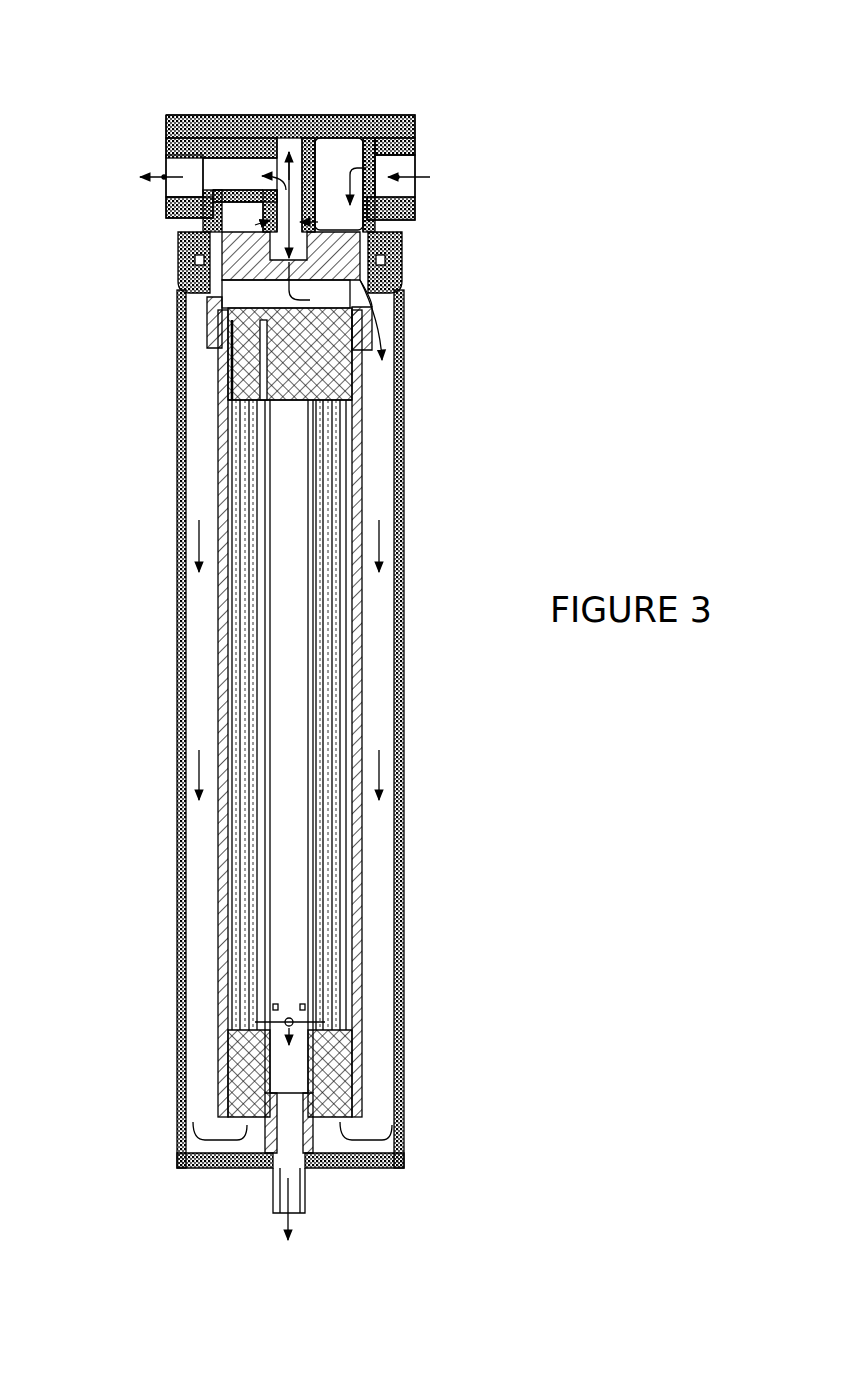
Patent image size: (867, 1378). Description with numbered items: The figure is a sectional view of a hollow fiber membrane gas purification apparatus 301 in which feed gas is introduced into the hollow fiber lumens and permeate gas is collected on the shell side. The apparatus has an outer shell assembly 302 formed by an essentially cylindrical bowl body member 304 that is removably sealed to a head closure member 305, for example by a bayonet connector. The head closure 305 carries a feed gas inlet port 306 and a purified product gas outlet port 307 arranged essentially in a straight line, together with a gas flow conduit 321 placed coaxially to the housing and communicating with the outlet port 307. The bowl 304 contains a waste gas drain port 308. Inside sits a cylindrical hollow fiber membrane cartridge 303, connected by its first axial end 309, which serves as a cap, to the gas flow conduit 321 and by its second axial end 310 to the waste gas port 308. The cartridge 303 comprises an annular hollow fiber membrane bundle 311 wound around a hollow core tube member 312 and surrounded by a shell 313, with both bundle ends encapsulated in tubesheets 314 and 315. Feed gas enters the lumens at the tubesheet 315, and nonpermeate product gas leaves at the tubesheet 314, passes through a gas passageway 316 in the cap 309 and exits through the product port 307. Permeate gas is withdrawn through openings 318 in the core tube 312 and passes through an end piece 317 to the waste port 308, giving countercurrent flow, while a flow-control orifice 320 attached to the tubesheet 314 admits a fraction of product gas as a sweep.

The gas purification apparatus 301 is at (322, 70).
The shell assembly 302 is at (432, 528).
The hollow fiber membrane cartridge 303 is at (380, 450).
The bowl body member 304 is at (406, 771).
The head closure member 305 is at (414, 121).
The feed gas inlet port 306 is at (398, 165).
The purified product gas outlet port 307 is at (178, 163).
The waste gas drain port 308 is at (293, 1200).
The first axial end 309 is at (410, 215).
The second axial end 310 is at (370, 1121).
The hollow fiber membrane bundle 311 is at (336, 490).
The hollow core tube member 312 is at (290, 490).
The shell 313 is at (364, 873).
The tubesheet 314 is at (365, 352).
The tubesheet 315 is at (240, 1062).
The gas passageway 316 is at (404, 250).
The end piece 317 is at (306, 1180).
The openings 318 is at (302, 1018).
The flow-control orifice 320 is at (262, 300).
The gas flow conduit 321 is at (225, 233).